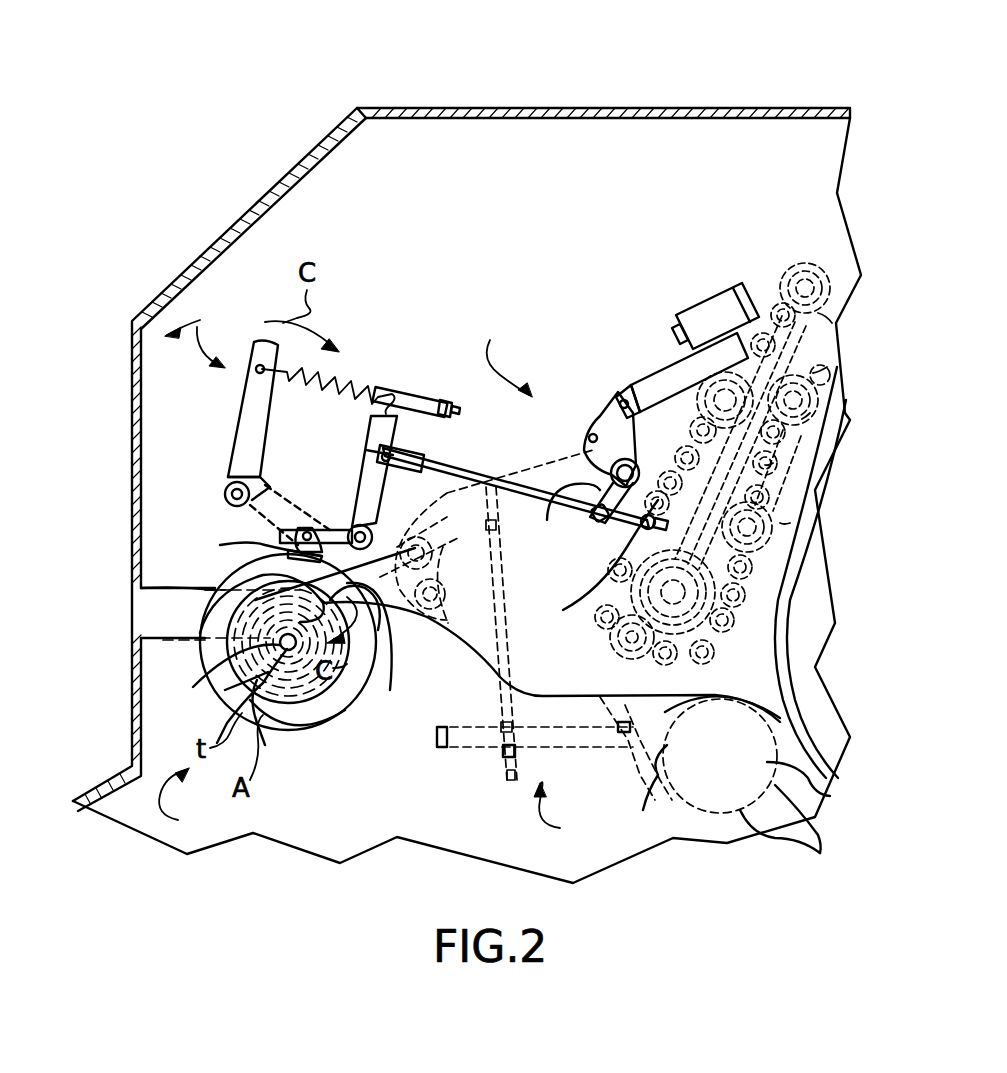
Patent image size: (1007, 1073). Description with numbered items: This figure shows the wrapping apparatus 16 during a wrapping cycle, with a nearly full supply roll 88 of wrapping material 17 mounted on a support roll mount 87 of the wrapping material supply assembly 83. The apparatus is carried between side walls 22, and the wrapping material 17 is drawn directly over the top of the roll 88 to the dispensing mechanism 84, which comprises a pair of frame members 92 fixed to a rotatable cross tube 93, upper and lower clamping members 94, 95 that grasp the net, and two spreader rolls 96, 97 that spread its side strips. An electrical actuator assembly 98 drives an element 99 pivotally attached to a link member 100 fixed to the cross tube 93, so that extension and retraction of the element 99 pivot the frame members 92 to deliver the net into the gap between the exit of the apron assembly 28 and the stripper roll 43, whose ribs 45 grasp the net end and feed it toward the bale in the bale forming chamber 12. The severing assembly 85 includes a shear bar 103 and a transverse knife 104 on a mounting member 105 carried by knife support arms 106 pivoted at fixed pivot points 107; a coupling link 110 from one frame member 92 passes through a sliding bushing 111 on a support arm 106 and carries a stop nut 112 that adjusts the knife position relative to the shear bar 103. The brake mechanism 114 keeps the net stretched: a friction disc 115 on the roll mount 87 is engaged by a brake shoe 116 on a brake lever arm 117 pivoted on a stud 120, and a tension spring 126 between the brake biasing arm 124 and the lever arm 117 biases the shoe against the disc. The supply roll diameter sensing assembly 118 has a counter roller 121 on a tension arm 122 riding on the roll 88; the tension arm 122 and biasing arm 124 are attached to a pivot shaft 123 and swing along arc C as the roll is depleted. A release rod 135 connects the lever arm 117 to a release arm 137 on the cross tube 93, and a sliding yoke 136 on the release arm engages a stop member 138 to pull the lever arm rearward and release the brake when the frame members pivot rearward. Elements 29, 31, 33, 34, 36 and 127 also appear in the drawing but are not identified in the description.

The bale forming chamber 12 is at (819, 598).
The wrapping apparatus 16 is at (207, 196).
The wrapping material 17 is at (250, 585).
The side walls 22 is at (626, 118).
The apron assembly 28 is at (827, 367).
The idler gear 29 is at (773, 463).
The guide plate 31 is at (784, 528).
The gear 33 is at (808, 414).
The drive gear 34 is at (832, 323).
The gear train 36 is at (710, 630).
The stripper roll 43 is at (823, 793).
The ribs 45 is at (816, 833).
The wrapping material supply assembly 83 is at (187, 801).
The dispensing mechanism 84 is at (505, 353).
The severing assembly 85 is at (564, 815).
The support roll mount 87 is at (225, 657).
The supply roll 88 is at (222, 670).
The frame members 92 is at (540, 462).
The cross tube 93 is at (590, 436).
The upper clamping member 94 is at (484, 664).
The lower clamping member 95 is at (468, 680).
The spreader roll 96 is at (416, 552).
The spreader roll 97 is at (430, 599).
The electrical actuator assembly 98 is at (694, 314).
The actuator element 99 is at (616, 394).
The link member 100 is at (612, 432).
The shear bar 103 is at (605, 675).
The transverse knife 104 is at (657, 714).
The mounting member 105 is at (641, 777).
The knife support arms 106 is at (573, 748).
The fixed pivot points 107 is at (405, 763).
The coupling link 110 is at (616, 725).
The sliding bushing 111 is at (481, 760).
The stop nut 112 is at (507, 760).
The wrapping material brake mechanism 114 is at (211, 328).
The friction disc 115 is at (280, 728).
The brake shoe 116 is at (245, 549).
The brake lever arm 117 is at (323, 530).
The supply roll diameter sensing assembly 118 is at (132, 540).
The stud 120 is at (345, 529).
The counter roller 121 is at (380, 592).
The tension arm 122 is at (250, 506).
The pivot shaft 123 is at (222, 494).
The brake biasing arm 124 is at (243, 410).
The tension spring 126 is at (342, 377).
The bracket 127 is at (432, 398).
The release rod 135 is at (470, 465).
The sliding yoke 136 is at (588, 540).
The release arm 137 is at (592, 518).
The stop member 138 is at (585, 555).